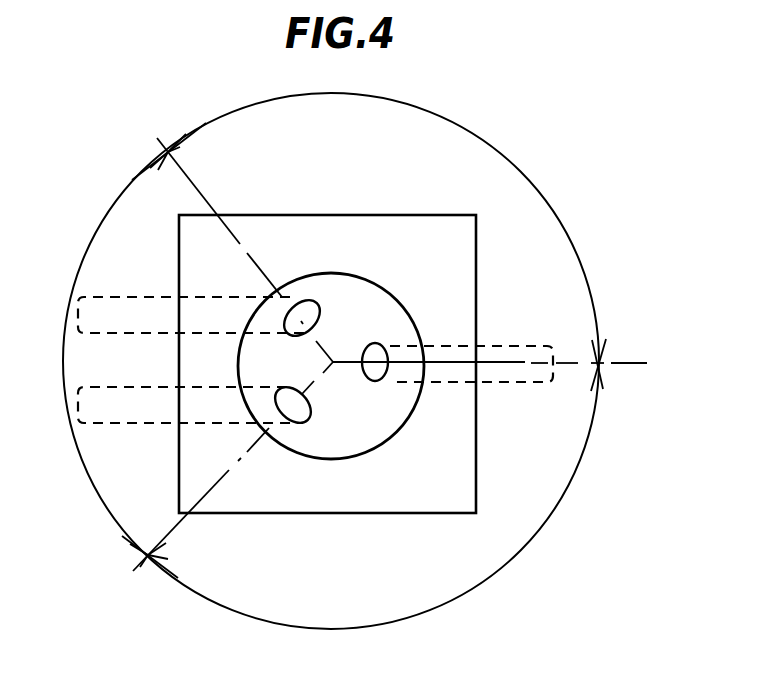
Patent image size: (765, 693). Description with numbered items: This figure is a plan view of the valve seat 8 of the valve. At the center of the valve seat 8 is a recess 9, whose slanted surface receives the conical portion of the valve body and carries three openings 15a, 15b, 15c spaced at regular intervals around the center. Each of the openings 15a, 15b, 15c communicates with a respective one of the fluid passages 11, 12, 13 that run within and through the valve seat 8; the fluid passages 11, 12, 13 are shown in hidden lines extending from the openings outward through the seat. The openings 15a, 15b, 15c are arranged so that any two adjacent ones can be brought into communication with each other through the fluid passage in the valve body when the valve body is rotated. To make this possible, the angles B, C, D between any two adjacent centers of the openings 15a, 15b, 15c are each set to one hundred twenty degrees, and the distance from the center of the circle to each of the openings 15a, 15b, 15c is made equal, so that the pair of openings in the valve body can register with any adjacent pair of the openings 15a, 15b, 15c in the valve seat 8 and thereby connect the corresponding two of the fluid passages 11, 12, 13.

The valve seat 8 is at (440, 483).
The recess 9 is at (370, 305).
The fluid passage 11 is at (130, 412).
The fluid passage 12 is at (108, 308).
The fluid passage 13 is at (530, 350).
The opening 15a is at (300, 412).
The opening 15b is at (305, 325).
The opening 15c is at (388, 346).
The angle B is at (334, 368).
The angle C is at (46, 300).
The angle D is at (516, 136).